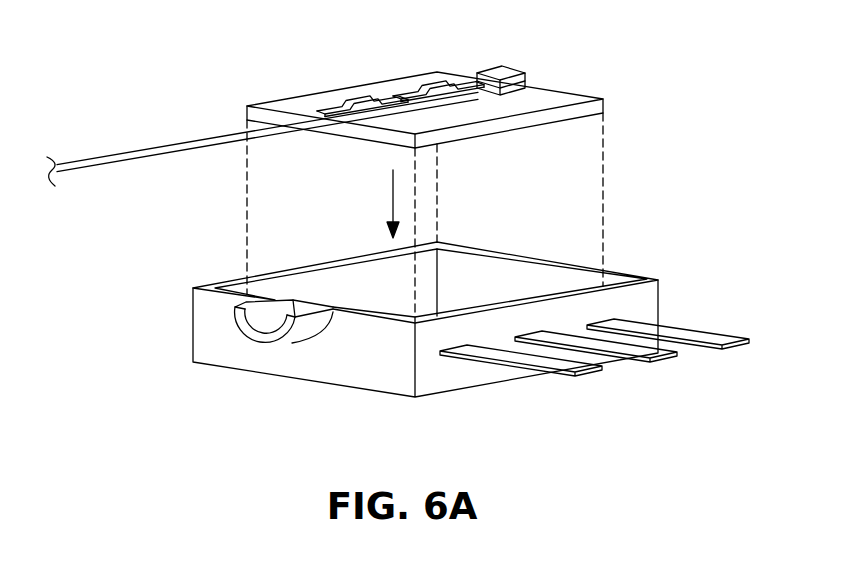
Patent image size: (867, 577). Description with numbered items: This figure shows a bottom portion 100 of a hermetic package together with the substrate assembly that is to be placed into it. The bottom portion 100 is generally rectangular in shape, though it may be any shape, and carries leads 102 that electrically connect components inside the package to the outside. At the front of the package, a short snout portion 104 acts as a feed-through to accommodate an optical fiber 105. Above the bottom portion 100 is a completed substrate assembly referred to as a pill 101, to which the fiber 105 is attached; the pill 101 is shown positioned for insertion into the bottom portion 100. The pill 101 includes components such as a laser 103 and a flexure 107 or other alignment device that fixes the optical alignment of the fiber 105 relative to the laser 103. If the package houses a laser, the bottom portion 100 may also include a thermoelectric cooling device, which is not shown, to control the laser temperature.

The bottom portion 100 is at (323, 384).
The pill 101 is at (563, 99).
The leads 102 is at (702, 335).
The laser 103 is at (500, 72).
The snout portion 104 is at (240, 311).
The optical fiber 105 is at (113, 158).
The flexure 107 is at (338, 109).